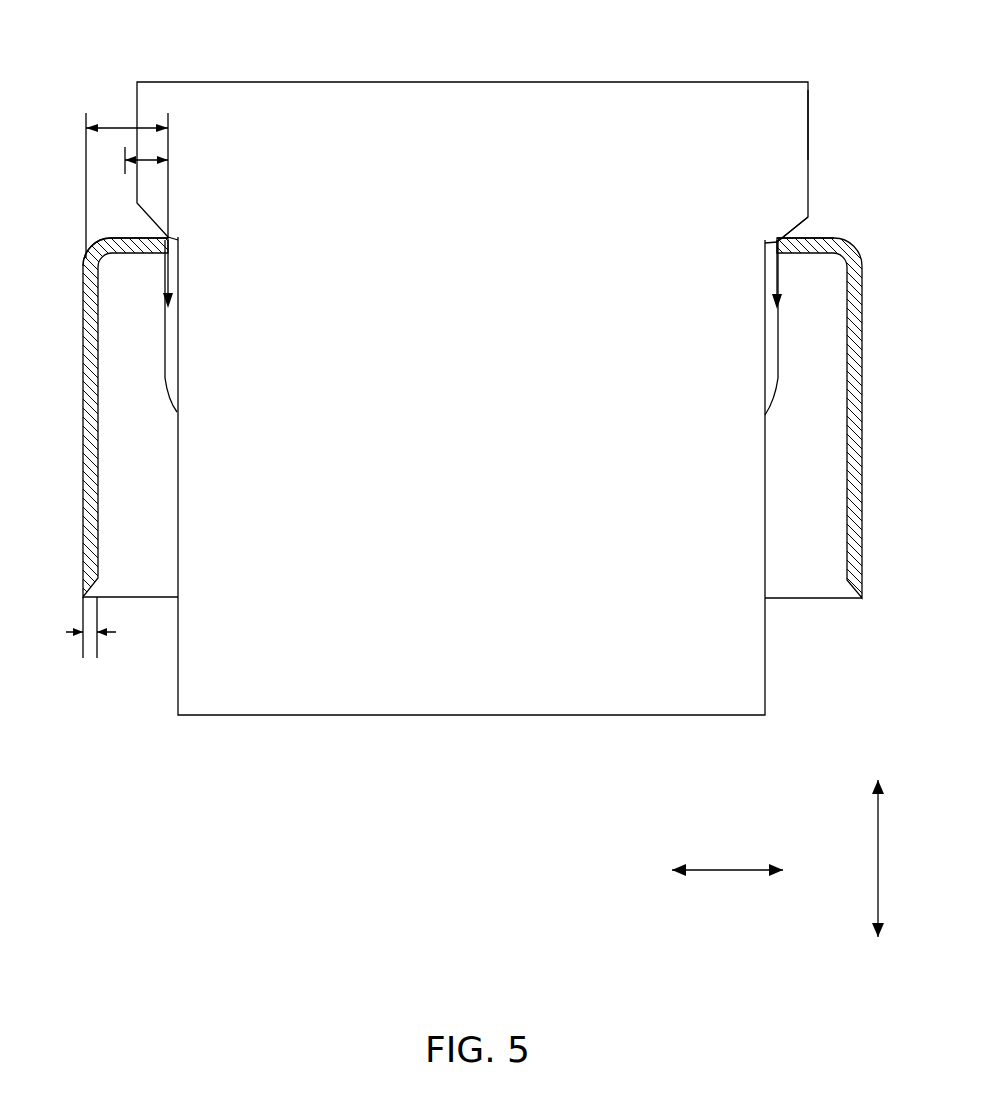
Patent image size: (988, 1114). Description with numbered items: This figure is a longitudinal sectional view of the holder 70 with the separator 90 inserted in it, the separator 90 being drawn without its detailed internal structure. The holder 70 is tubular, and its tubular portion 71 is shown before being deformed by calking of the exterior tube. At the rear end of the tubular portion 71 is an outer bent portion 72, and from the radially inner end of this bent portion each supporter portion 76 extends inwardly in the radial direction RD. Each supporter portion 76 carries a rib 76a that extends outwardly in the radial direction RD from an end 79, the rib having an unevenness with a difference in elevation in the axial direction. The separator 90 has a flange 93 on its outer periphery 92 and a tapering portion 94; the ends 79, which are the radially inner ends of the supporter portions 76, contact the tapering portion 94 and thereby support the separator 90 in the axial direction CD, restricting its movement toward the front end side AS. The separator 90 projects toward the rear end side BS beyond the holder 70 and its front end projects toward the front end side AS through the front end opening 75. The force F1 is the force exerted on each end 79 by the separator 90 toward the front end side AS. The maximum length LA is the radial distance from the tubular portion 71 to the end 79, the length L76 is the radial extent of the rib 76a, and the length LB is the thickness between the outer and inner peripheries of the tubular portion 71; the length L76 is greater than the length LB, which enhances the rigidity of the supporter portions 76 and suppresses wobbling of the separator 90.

The separator 90 is at (709, 78).
The outer periphery 92 is at (765, 688).
The flange 93 is at (808, 127).
The tapering portion 94 is at (796, 226).
The holder 70 is at (494, 418).
The tubular portion 71 is at (83, 408).
The outer bent portion 72 is at (88, 254).
The front end opening 75 is at (830, 599).
The supporter portion 76 is at (128, 238).
The rib 76a is at (148, 256).
The end 79 is at (176, 240).
The force F1 is at (178, 278).
The maximum length LA is at (127, 174).
The length L76 is at (150, 158).
The length LB is at (107, 630).
The radial direction RD is at (727, 855).
The axial direction CD is at (898, 858).
The rear end side BS is at (874, 756).
The front end side AS is at (874, 963).